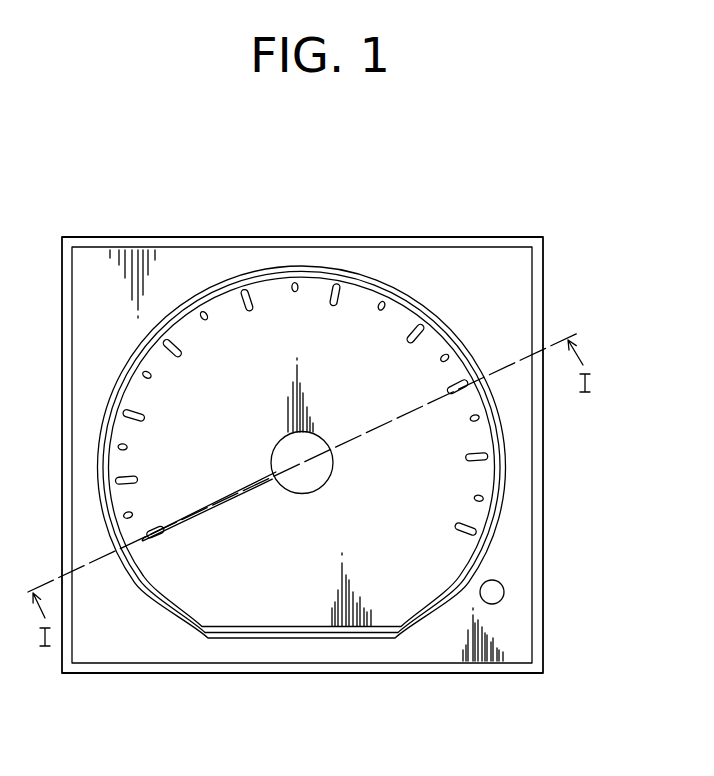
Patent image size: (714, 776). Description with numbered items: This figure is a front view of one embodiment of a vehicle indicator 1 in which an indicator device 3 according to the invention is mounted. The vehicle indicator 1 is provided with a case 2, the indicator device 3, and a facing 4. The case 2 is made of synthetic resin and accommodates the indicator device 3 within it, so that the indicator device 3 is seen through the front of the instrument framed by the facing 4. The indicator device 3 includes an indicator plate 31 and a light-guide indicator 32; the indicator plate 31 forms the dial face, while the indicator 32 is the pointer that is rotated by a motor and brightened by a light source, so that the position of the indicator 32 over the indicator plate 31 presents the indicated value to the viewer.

The vehicle indicator 1 is at (461, 237).
The case 2 is at (542, 483).
The indicator device 3 is at (318, 300).
The facing 4 is at (110, 643).
The indicator plate 31 is at (401, 582).
The indicator 32 is at (225, 505).